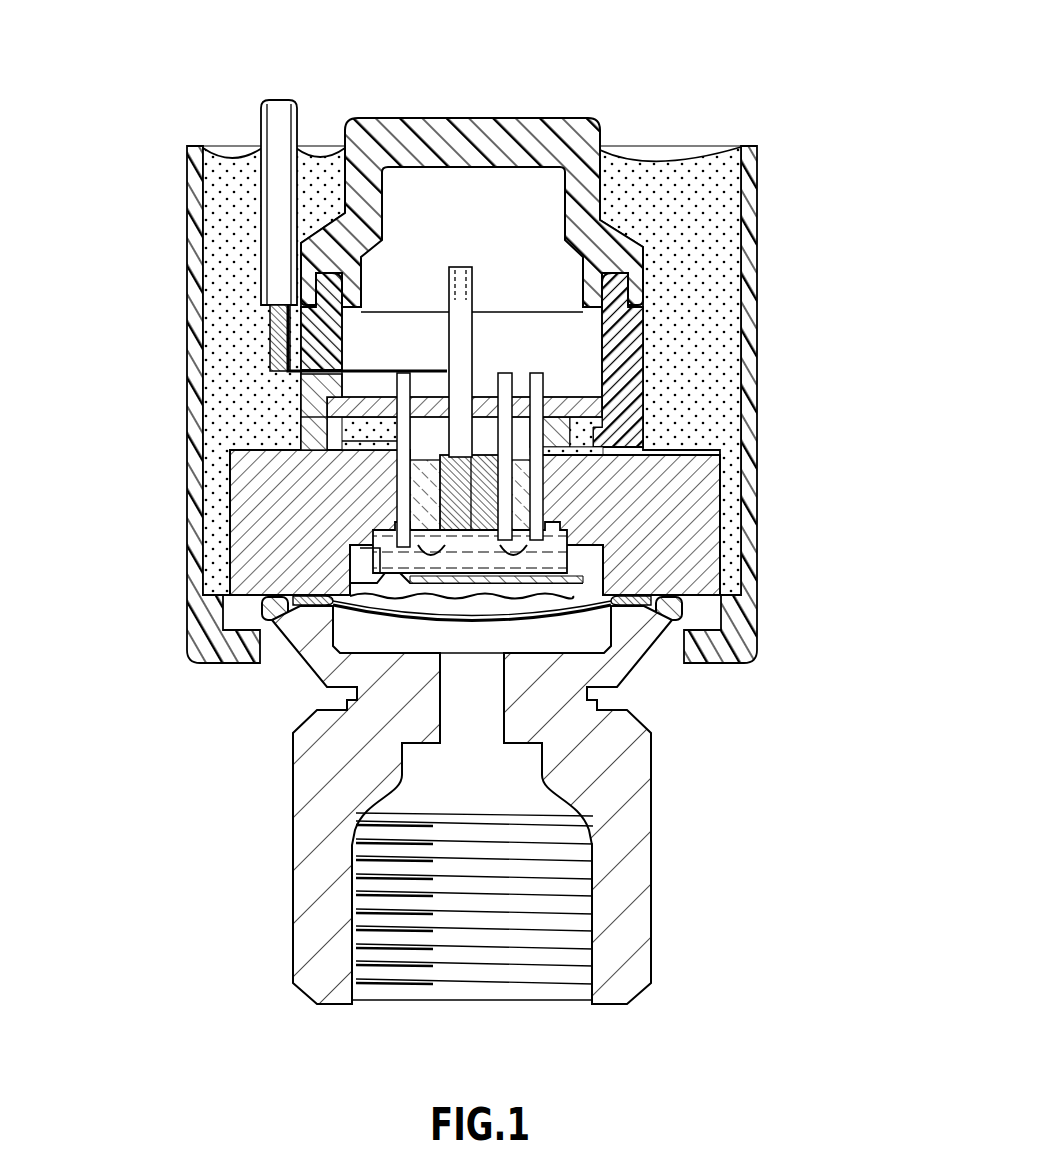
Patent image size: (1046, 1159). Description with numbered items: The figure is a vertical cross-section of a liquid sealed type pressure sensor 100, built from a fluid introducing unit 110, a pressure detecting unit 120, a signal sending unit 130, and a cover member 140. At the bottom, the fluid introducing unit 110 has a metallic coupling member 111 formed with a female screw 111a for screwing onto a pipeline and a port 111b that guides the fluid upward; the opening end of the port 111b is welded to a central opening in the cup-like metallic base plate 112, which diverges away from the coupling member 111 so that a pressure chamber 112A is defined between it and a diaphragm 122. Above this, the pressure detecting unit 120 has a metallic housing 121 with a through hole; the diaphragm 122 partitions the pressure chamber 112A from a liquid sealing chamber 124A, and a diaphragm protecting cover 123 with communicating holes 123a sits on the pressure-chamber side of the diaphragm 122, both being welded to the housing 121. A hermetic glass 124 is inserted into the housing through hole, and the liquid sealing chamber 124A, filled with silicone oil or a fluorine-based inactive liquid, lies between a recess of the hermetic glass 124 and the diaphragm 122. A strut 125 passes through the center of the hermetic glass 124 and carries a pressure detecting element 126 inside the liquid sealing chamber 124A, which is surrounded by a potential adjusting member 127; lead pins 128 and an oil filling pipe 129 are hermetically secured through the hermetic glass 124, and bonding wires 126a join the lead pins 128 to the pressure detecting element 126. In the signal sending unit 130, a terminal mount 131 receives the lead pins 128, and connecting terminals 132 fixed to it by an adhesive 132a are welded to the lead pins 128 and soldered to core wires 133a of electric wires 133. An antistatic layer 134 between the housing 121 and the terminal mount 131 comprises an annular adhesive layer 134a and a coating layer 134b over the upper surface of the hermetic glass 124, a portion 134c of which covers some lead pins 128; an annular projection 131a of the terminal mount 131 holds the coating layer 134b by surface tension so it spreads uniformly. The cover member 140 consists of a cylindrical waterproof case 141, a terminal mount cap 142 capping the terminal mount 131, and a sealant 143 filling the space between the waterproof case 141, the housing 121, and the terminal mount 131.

The pressure sensor 100 is at (448, 535).
The fluid introducing unit 110 is at (538, 837).
The coupling member 111 is at (645, 880).
The female screw 111a is at (598, 967).
The port 111b is at (500, 720).
The base plate 112 is at (632, 690).
The pressure chamber 112A is at (624, 652).
The pressure detecting unit 120 is at (448, 511).
The housing 121 is at (685, 467).
The diaphragm 122 is at (340, 630).
The diaphragm protecting cover 123 is at (400, 622).
The communicating holes 123a is at (344, 612).
The hermetic glass 124 is at (590, 493).
The liquid sealing chamber 124A is at (550, 572).
The strut 125 is at (590, 518).
The pressure detecting element 126 is at (545, 534).
The bonding wires 126a is at (385, 561).
The potential adjusting member 127 is at (400, 577).
The lead pins 128 is at (537, 377).
The oil filling pipe 129 is at (472, 284).
The signal sending unit 130 is at (359, 323).
The terminal mount 131 is at (636, 348).
The annular projection 131a is at (598, 428).
The connecting terminals 132 is at (382, 372).
The adhesive 132a is at (322, 399).
The electric wires 133 is at (272, 233).
The core wires 133a is at (280, 312).
The antistatic layer 134 is at (229, 453).
The annular adhesive layer 134a is at (400, 459).
The coating layer 134b is at (385, 449).
The portion 134c is at (352, 437).
The cover member 140 is at (509, 366).
The waterproof case 141 is at (746, 160).
The terminal mount cap 142 is at (570, 138).
The sealant 143 is at (230, 190).